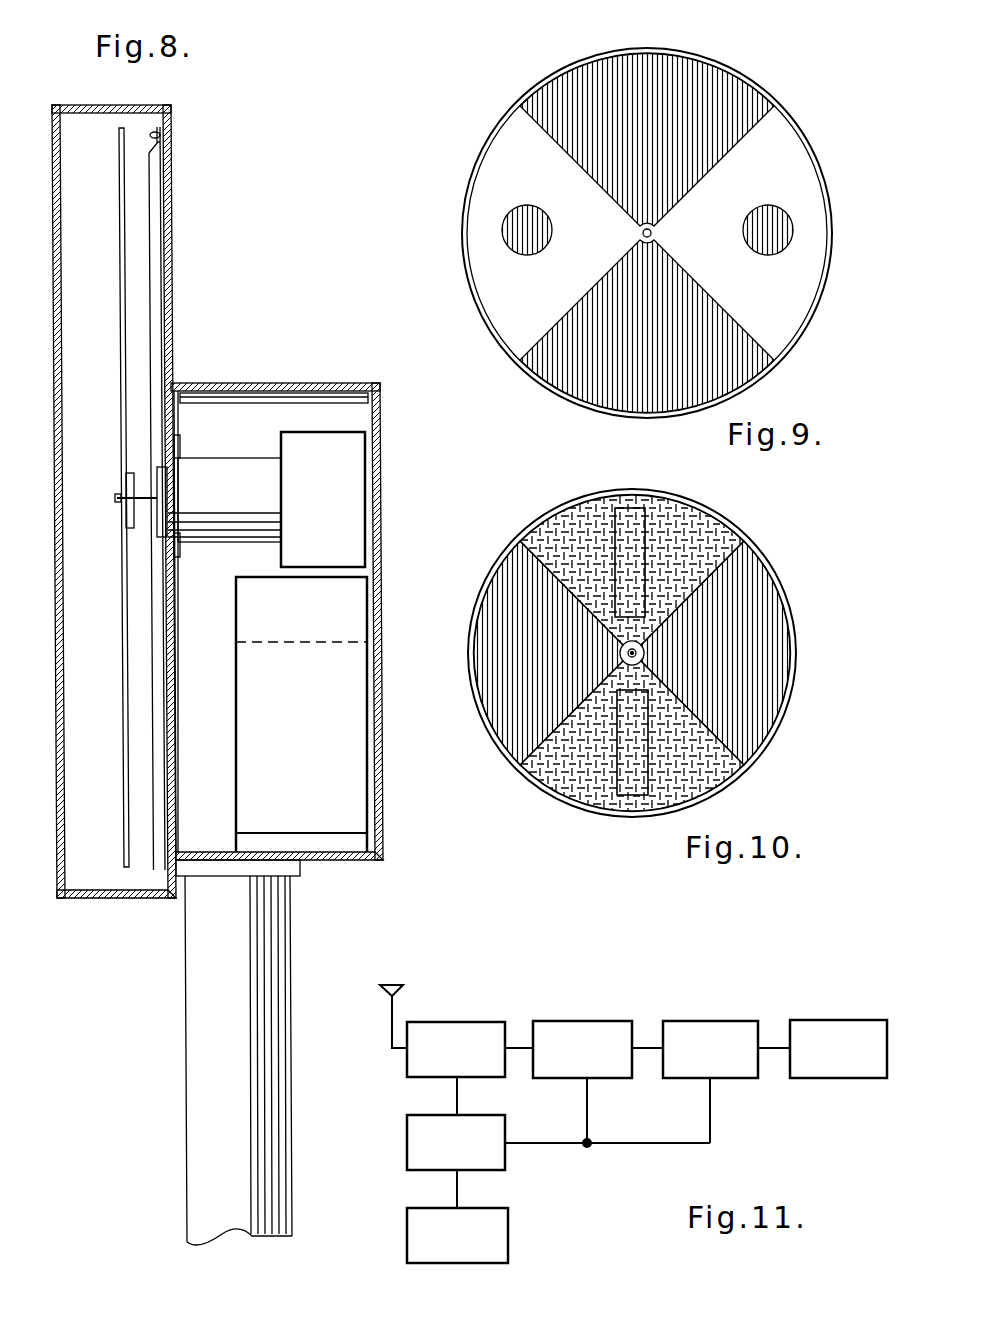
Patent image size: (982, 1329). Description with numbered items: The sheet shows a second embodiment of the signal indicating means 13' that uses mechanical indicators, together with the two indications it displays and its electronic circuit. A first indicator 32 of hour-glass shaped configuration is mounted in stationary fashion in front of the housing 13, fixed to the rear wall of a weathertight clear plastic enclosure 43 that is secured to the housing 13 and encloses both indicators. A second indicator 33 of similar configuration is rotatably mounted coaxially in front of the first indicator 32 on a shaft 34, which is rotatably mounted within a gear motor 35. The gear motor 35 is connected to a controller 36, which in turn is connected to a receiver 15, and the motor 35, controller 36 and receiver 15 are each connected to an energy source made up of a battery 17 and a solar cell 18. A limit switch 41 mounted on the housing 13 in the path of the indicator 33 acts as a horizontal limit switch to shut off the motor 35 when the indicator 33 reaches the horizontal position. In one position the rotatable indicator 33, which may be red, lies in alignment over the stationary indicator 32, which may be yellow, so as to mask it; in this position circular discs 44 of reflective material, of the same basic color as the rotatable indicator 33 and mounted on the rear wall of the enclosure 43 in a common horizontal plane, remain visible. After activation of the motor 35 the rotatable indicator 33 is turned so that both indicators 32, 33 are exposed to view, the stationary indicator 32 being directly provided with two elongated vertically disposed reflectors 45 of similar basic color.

In FIG. 8, the housing 13 is at (277, 758).
In FIG. 11, the signal indicating means 13' is at (838, 1027).
In FIG. 8, the receiver 15 is at (351, 784).
In FIG. 11, the receiver 15 is at (407, 1077).
In FIG. 8, the battery 17 is at (352, 537).
In FIG. 11, the battery 17 is at (407, 1168).
In FIG. 8, the solar cell 18 is at (290, 402).
In FIG. 11, the solar cell 18 is at (408, 1263).
In FIG. 8, the first indicator 32 is at (162, 133).
In FIG. 10, the first indicator 32 is at (708, 525).
In FIG. 8, the second indicator 33 is at (120, 236).
In FIG. 9, the second indicator 33 is at (618, 190).
In FIG. 10, the second indicator 33 is at (750, 567).
In FIG. 8, the shaft 34 is at (139, 503).
In FIG. 9, the shaft 34 is at (651, 231).
In FIG. 8, the gear motor 35 is at (240, 463).
In FIG. 11, the gear motor 35 is at (710, 1022).
In FIG. 8, the controller 36 is at (352, 627).
In FIG. 11, the controller 36 is at (548, 1022).
In FIG. 8, the limit switch 41 is at (178, 540).
In FIG. 8, the enclosure 43 is at (52, 239).
In FIG. 9, the enclosure 43 is at (830, 258).
In FIG. 10, the enclosure 43 is at (790, 623).
In FIG. 9, the circular discs 44 is at (525, 253).
In FIG. 8, the elongated reflectors 45 is at (152, 273).
In FIG. 10, the elongated reflectors 45 is at (642, 507).